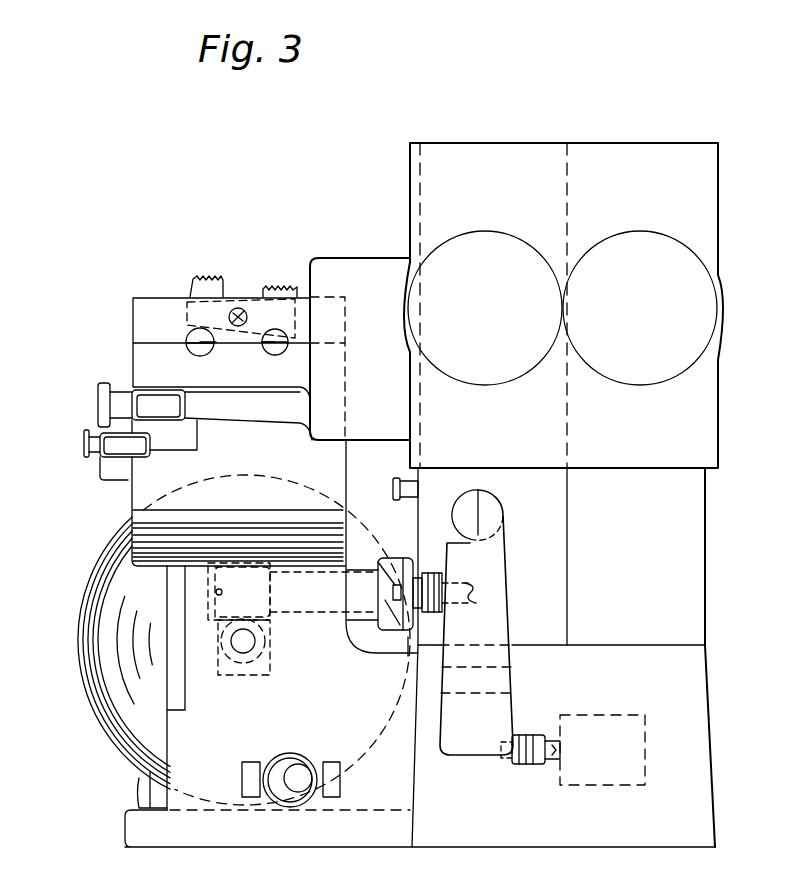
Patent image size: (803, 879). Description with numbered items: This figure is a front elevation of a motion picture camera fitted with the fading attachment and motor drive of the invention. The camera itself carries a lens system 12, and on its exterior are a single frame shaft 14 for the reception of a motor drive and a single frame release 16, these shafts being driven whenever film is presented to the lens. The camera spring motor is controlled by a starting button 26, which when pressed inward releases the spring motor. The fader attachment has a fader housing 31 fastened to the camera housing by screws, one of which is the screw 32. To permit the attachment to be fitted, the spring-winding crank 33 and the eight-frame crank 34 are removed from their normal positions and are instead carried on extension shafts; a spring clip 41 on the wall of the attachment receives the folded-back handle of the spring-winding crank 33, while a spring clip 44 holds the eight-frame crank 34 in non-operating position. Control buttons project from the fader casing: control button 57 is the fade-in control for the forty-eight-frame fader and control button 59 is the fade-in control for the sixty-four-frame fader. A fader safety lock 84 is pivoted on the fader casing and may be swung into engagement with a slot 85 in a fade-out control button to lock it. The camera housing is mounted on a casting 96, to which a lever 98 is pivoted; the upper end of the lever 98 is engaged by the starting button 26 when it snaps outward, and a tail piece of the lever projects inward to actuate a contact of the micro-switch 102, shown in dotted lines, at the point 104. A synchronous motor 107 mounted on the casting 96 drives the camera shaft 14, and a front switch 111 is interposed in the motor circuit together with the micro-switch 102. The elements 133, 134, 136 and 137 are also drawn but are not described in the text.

The lens system 12 is at (562, 305).
The single frame shaft 14 is at (463, 590).
The single frame release 16 is at (410, 482).
The starting button 26 is at (462, 507).
The fader housing 31 is at (255, 551).
The screw 32 is at (293, 619).
The spring-winding crank 33 is at (100, 403).
The eight-frame crank 34 is at (84, 445).
The spring clip 41 is at (166, 390).
The spring clip 44 is at (140, 456).
The control button 57 is at (197, 356).
The control button 59 is at (276, 355).
The fader safety lock 84 is at (255, 312).
The slot 85 is at (203, 344).
The casting 96 is at (712, 688).
The lever 98 is at (500, 622).
The micro-switch 102 is at (645, 760).
The micro-switch contact 104 is at (533, 737).
The synchronous motor 107 is at (78, 652).
The front switch 111 is at (300, 784).
The bracket 133 is at (331, 623).
The coupling nut 134 is at (431, 575).
The knob 136 is at (408, 557).
The knob face 137 is at (382, 558).